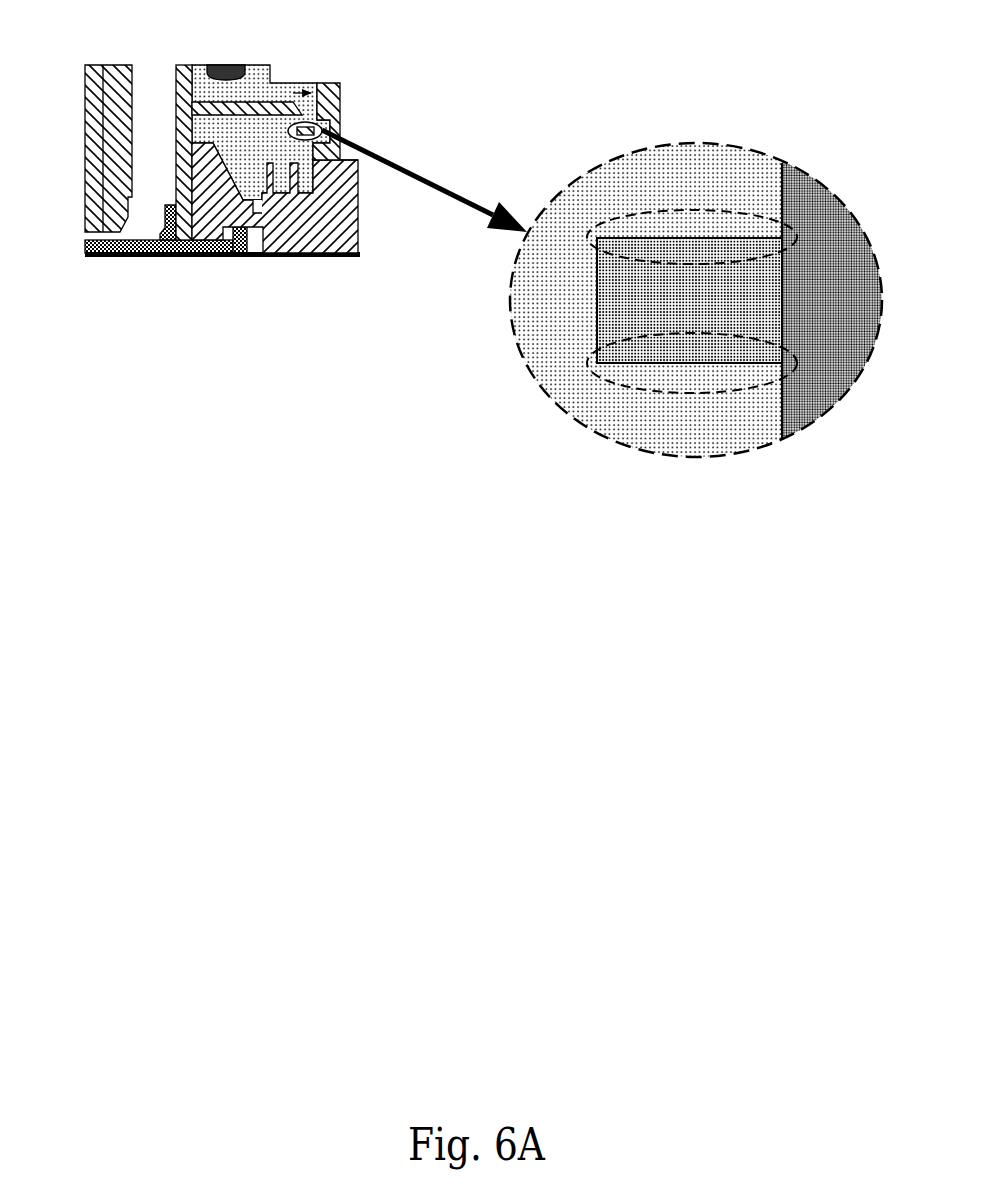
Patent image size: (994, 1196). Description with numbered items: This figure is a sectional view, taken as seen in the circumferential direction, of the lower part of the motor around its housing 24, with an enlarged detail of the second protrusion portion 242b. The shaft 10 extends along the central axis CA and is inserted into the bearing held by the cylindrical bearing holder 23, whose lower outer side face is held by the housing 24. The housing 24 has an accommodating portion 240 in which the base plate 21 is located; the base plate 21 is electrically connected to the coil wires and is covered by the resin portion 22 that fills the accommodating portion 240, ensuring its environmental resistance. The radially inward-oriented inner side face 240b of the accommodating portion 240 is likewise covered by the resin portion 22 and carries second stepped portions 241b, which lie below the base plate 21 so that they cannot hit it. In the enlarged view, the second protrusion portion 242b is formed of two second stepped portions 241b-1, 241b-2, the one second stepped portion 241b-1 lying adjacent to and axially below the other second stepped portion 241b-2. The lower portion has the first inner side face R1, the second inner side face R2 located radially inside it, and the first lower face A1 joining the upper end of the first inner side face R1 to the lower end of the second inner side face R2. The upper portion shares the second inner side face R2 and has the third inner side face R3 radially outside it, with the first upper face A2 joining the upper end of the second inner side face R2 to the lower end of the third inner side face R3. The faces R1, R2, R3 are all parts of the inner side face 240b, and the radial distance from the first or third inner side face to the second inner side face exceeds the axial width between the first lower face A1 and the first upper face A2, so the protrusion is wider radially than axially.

The shaft 10 is at (90, 78).
The base plate 21 is at (208, 106).
The resin portion 22 is at (686, 300).
The bearing holder 23 is at (183, 200).
The housing 24 is at (215, 213).
The central axis CA is at (103, 232).
The accommodating portion 240 is at (320, 179).
The inner side face 240b is at (297, 108).
The second stepped portion 241b is at (296, 113).
The one second stepped portion 241b-1 is at (575, 420).
The other second stepped portion 241b-2 is at (822, 177).
The second protrusion portion 242b is at (617, 307).
The first lower face A1 is at (690, 365).
The first upper face A2 is at (627, 233).
The first inner side face R1 is at (775, 408).
The second inner side face R2 is at (593, 293).
The third inner side face R3 is at (778, 185).